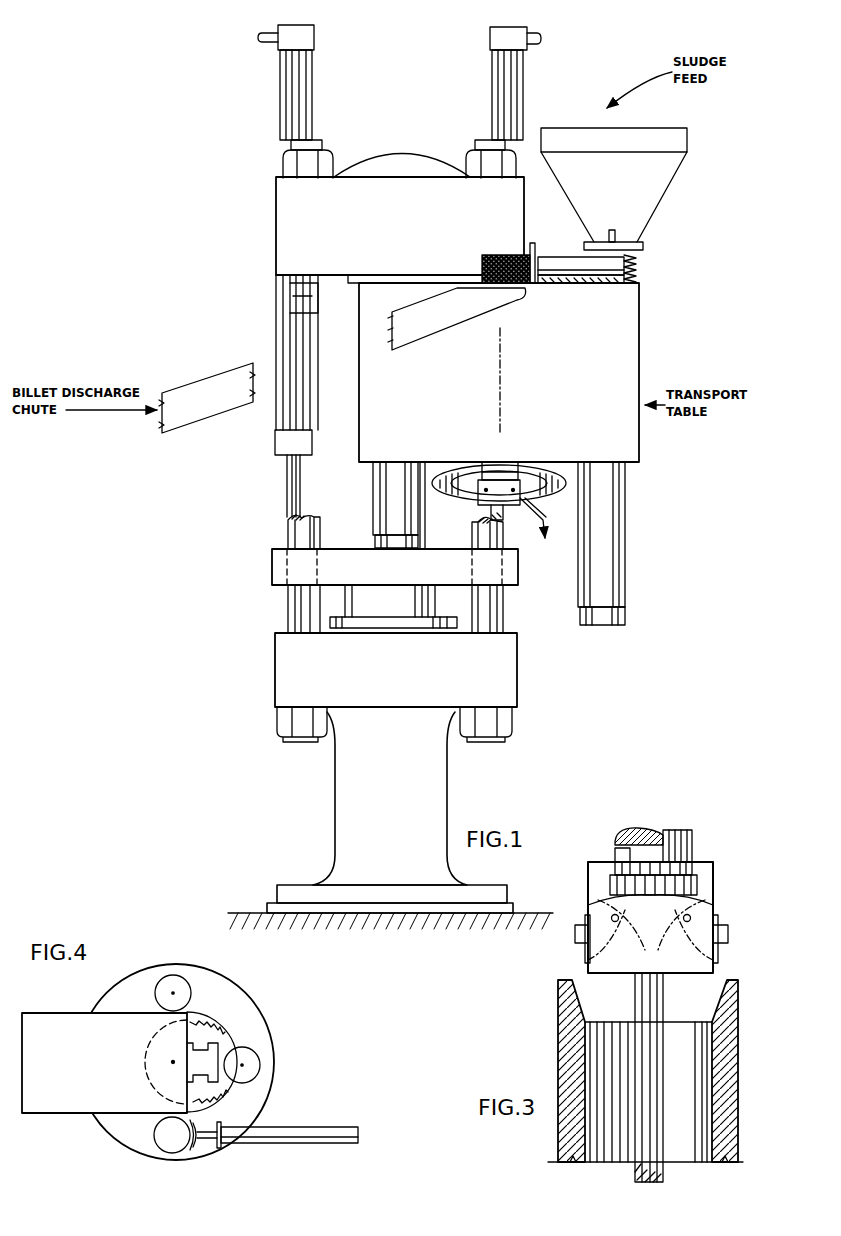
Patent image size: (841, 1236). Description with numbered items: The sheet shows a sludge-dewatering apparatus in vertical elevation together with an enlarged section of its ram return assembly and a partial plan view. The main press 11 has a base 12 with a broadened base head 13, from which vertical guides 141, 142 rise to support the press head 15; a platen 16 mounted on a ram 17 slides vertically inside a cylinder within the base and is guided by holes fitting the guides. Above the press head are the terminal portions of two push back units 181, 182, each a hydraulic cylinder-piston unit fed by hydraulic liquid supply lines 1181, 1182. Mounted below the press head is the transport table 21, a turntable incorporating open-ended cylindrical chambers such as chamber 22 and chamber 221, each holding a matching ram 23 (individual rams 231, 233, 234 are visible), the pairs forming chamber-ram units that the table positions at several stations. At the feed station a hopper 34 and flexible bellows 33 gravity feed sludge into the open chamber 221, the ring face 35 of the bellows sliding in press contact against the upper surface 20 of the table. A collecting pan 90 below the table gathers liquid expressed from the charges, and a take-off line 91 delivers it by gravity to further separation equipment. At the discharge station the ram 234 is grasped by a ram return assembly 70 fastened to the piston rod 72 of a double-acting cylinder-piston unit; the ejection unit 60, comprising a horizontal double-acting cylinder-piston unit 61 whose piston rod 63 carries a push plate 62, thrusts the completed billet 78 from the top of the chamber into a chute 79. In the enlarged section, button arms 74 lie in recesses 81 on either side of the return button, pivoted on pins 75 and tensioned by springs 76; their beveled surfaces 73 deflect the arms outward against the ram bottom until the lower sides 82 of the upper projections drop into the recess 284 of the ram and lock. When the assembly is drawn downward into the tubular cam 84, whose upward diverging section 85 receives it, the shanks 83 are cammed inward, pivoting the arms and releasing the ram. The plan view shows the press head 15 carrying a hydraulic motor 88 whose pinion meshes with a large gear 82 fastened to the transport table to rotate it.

In FIG. 1, the main press 11 is at (245, 533).
In FIG. 1, the base 12 is at (404, 794).
In FIG. 1, the base head 13 is at (407, 679).
In FIG. 1, the vertical guide rod 141 is at (289, 597).
In FIG. 1, the vertical guide rod 142 is at (503, 596).
In FIG. 1, the press head 15 is at (409, 226).
In FIG. 4, the press head 15 is at (76, 1072).
In FIG. 1, the platen 16 is at (407, 576).
In FIG. 1, the ram 17 is at (400, 609).
In FIG. 1, the push back unit 181 is at (492, 72).
In FIG. 1, the push back unit 182 is at (313, 95).
In FIG. 1, the hydraulic liquid supply line 1181 is at (278, 32).
In FIG. 1, the hydraulic liquid supply line 1182 is at (530, 36).
In FIG. 1, the upper surface of the transport table 20 is at (373, 283).
In FIG. 4, the upper surface of the transport table 20 is at (226, 1008).
In FIG. 1, the transport table 21 is at (558, 375).
In FIG. 4, the transport table 21 is at (220, 975).
In FIG. 4, the chamber 22 is at (168, 975).
In FIG. 4, the chamber 221 is at (260, 1063).
In FIG. 1, the ram 23 is at (465, 492).
In FIG. 1, the ram 231 is at (627, 500).
In FIG. 1, the ram 233 is at (418, 490).
In FIG. 3, the ram 234 is at (692, 835).
In FIG. 3, the recess 284 is at (663, 834).
In FIG. 1, the bellows 33 is at (637, 262).
In FIG. 1, the hopper 34 is at (623, 193).
In FIG. 1, the ring face 35 is at (625, 280).
In FIG. 1, the ejection unit 60 is at (541, 258).
In FIG. 4, the ejection cylinder-piston unit 61 is at (290, 1131).
In FIG. 4, the push plate 62 is at (192, 1150).
In FIG. 4, the piston rod 63 is at (210, 1140).
In FIG. 1, the ram return assembly 70 is at (506, 506).
In FIG. 3, the piston rod 72 is at (655, 1043).
In FIG. 3, the upper beveled surface 73 is at (625, 852).
In FIG. 3, the button arm 74 is at (590, 862).
In FIG. 3, the pin 75 is at (691, 918).
In FIG. 3, the button arm spring 76 is at (716, 966).
In FIG. 1, the billet 78 is at (480, 257).
In FIG. 4, the billet 78 is at (182, 1144).
In FIG. 1, the chute 79 is at (212, 407).
In FIG. 3, the recess 81 is at (718, 952).
In FIG. 3, the lower side 82 is at (611, 886).
In FIG. 4, the lower side 82 is at (212, 1042).
In FIG. 3, the shank 83 is at (728, 934).
In FIG. 3, the cam 84 is at (738, 1064).
In FIG. 3, the upward diverging section 85 is at (616, 1003).
In FIG. 4, the hydraulic motor 88 is at (209, 1071).
In FIG. 1, the collecting pan 90 is at (548, 492).
In FIG. 1, the take-off line 91 is at (545, 518).